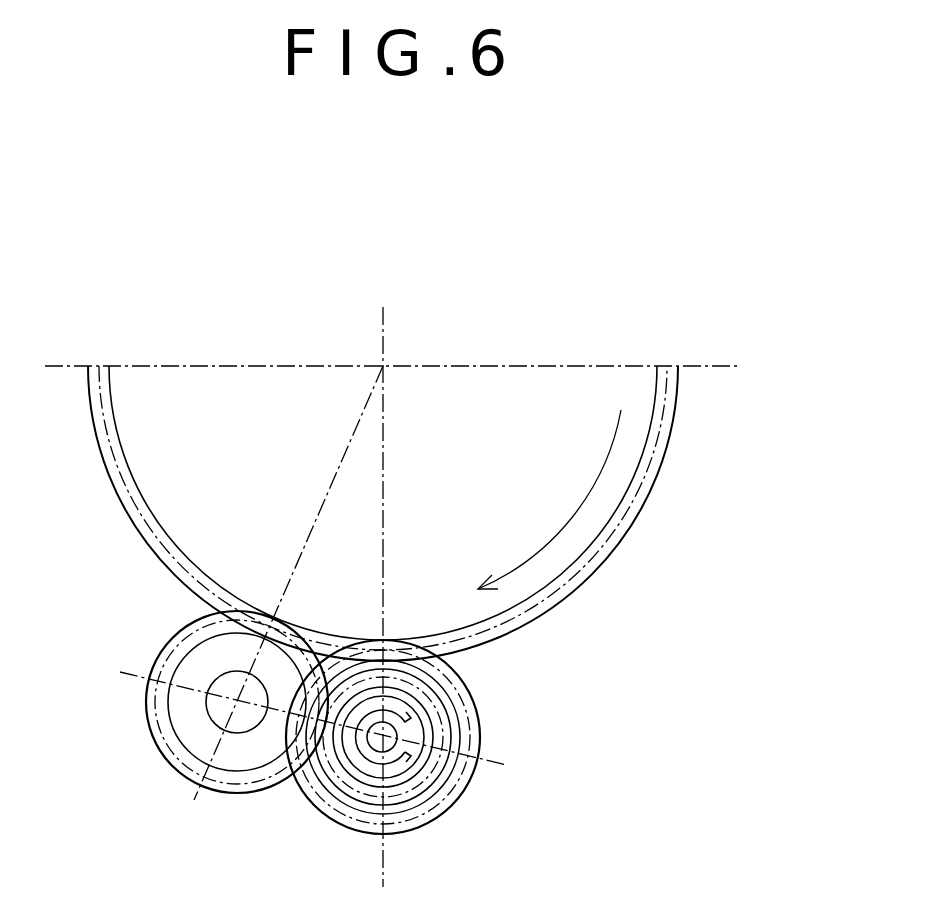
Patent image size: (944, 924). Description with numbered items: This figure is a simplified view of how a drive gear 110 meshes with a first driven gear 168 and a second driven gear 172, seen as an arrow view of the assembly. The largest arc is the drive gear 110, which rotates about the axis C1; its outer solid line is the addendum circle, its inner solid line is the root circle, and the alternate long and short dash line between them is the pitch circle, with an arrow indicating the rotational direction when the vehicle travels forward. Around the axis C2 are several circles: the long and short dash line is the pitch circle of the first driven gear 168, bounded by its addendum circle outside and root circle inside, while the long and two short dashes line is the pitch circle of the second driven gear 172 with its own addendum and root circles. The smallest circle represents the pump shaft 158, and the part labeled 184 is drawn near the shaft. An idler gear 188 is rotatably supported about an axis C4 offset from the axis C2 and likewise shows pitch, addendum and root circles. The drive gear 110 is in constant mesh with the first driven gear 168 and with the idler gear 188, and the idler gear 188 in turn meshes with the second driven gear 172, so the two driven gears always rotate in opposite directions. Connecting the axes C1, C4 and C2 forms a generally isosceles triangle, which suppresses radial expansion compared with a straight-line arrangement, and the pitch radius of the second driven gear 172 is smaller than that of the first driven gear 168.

The drive gear 110 is at (640, 495).
The first driven gear 168 is at (455, 785).
The second driven gear 172 is at (453, 720).
The pump shaft 158 is at (370, 742).
The shaft 184 is at (398, 745).
The idler gear 188 is at (173, 757).
The axis C1 is at (383, 366).
The axis C2 is at (383, 737).
The axis C4 is at (237, 702).